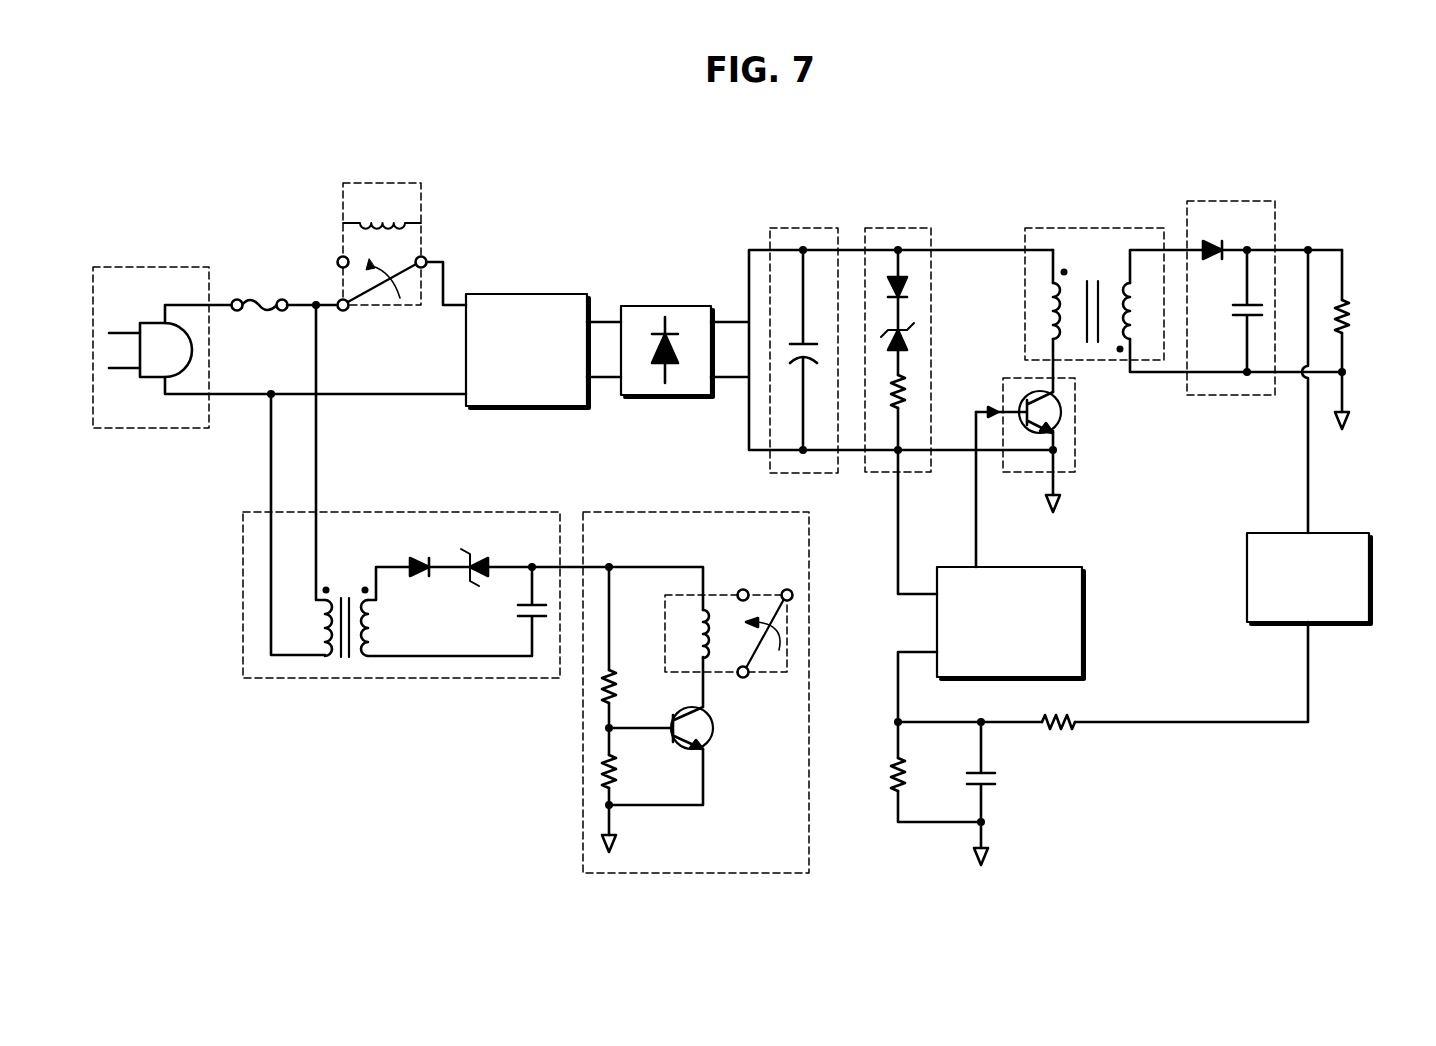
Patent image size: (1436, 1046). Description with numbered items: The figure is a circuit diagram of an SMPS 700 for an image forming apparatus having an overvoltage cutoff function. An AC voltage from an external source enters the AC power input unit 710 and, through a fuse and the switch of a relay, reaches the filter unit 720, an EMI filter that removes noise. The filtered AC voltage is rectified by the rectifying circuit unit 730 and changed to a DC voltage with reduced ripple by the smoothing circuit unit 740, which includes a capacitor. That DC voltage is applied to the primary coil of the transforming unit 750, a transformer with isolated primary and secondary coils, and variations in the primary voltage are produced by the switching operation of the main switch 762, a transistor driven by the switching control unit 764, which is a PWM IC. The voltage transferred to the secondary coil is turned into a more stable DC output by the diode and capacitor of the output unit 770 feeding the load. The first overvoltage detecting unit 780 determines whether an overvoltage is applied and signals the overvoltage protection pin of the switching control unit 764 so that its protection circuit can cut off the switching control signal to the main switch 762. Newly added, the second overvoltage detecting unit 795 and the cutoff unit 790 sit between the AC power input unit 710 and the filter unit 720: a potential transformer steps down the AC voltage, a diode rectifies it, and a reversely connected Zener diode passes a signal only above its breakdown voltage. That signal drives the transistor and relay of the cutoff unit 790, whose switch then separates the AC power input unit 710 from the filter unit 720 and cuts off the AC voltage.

The SMPS 700 is at (1020, 178).
The AC power input unit 710 is at (148, 267).
The filter unit 720 is at (530, 293).
The rectifying circuit unit 730 is at (667, 305).
The smoothing circuit unit 740 is at (822, 228).
The transforming unit 750 is at (1095, 228).
The main switch 762 is at (1075, 412).
The switching control unit 764 is at (1017, 567).
The output unit 770 is at (1240, 201).
The first overvoltage detecting unit 780 is at (908, 228).
The cutoff unit 790 is at (693, 512).
The second overvoltage detecting unit 795 is at (448, 512).